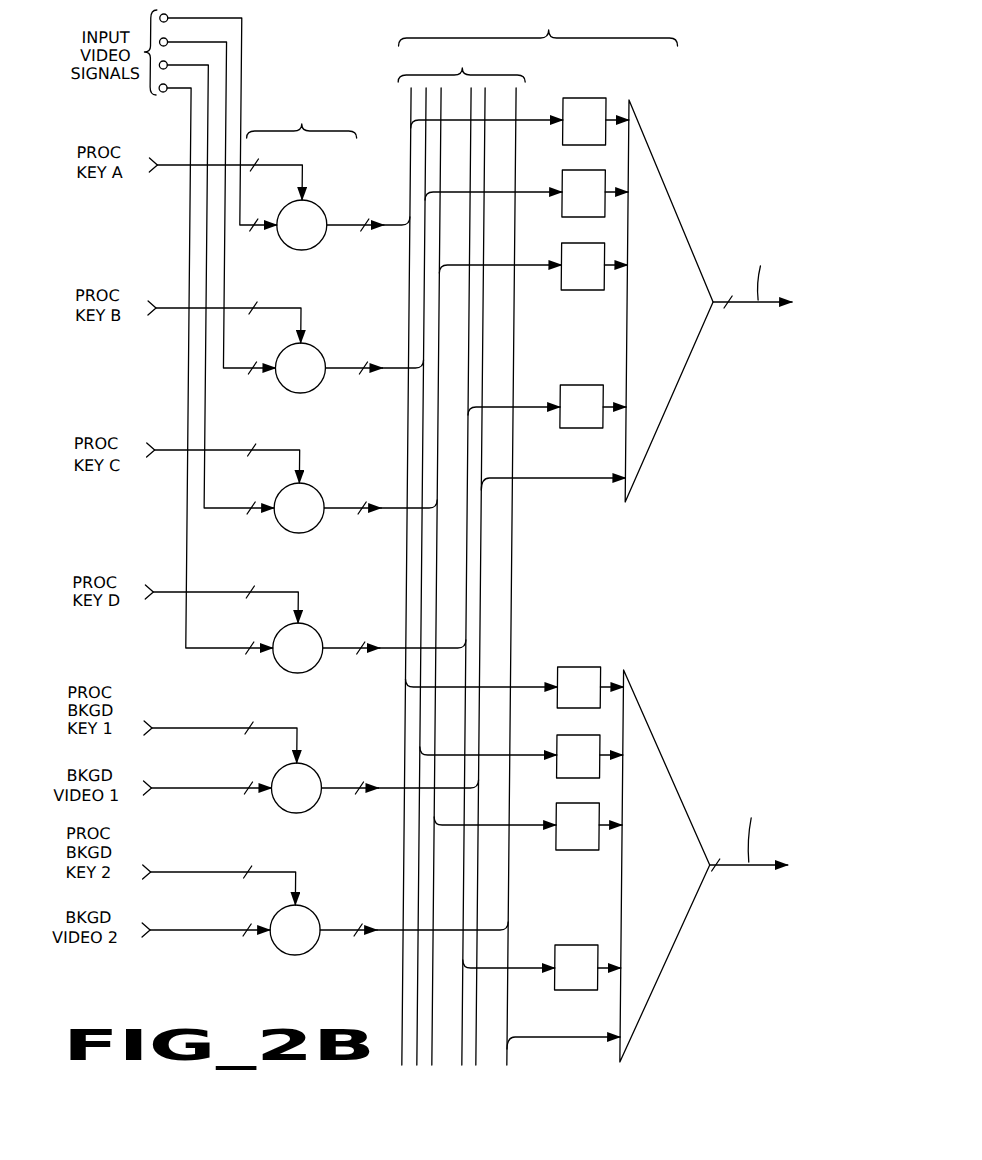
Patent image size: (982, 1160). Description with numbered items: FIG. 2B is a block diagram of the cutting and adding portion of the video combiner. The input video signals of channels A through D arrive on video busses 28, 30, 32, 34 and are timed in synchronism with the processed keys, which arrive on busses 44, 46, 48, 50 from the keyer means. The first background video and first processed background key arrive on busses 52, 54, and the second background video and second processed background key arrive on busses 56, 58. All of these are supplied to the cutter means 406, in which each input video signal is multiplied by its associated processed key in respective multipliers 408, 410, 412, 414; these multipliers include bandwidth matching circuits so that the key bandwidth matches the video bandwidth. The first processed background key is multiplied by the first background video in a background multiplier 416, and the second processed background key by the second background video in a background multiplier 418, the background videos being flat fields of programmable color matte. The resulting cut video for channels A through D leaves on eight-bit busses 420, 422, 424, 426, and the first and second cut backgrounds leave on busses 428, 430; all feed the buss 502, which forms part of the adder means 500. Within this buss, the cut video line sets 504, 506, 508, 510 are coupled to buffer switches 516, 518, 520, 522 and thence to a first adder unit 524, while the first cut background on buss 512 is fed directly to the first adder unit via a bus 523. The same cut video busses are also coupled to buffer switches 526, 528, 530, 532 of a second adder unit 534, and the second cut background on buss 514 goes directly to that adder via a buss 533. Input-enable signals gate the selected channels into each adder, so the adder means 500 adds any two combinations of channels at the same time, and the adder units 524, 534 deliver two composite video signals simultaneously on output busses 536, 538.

The video buss 28 is at (241, 18).
The video buss 30 is at (226, 42).
The video buss 32 is at (208, 65).
The video buss 34 is at (191, 88).
The processed key buss 44 is at (167, 167).
The processed key buss 46 is at (167, 310).
The processed key buss 48 is at (167, 452).
The processed key buss 50 is at (167, 594).
The background video buss 52 is at (165, 790).
The processed background key buss 54 is at (165, 730).
The background video buss 56 is at (165, 932).
The processed background key buss 58 is at (165, 874).
The cutter means 406 is at (302, 118).
The multiplier 408 is at (318, 200).
The multiplier 410 is at (318, 343).
The multiplier 412 is at (318, 483).
The multiplier 414 is at (318, 623).
The background multiplier 416 is at (318, 763).
The background multiplier 418 is at (318, 905).
The cut video buss 420 is at (340, 220).
The cut video buss 422 is at (340, 362).
The cut video buss 424 is at (340, 502).
The cut video buss 426 is at (340, 642).
The cut background buss 428 is at (340, 782).
The cut background buss 430 is at (340, 924).
The adder means 500 is at (538, 27).
The buss 502 is at (461, 64).
The cut video buss 504 is at (411, 551).
The cut video buss 506 is at (426, 568).
The cut video buss 508 is at (441, 584).
The cut video buss 510 is at (471, 535).
The buss 512 is at (485, 557).
The buss 514 is at (516, 580).
The buffer switch 516 is at (588, 98).
The buffer switch 518 is at (568, 170).
The buffer switch 520 is at (570, 243).
The buffer switch 522 is at (572, 385).
The bus 523 is at (543, 478).
The first adder unit 524 is at (648, 163).
The buffer switch 526 is at (579, 667).
The buffer switch 528 is at (578, 735).
The buffer switch 530 is at (578, 803).
The buffer switch 532 is at (579, 945).
The buss 533 is at (540, 1037).
The second adder unit 534 is at (648, 736).
The composite video output buss 536 is at (749, 305).
The composite video output buss 538 is at (741, 868).